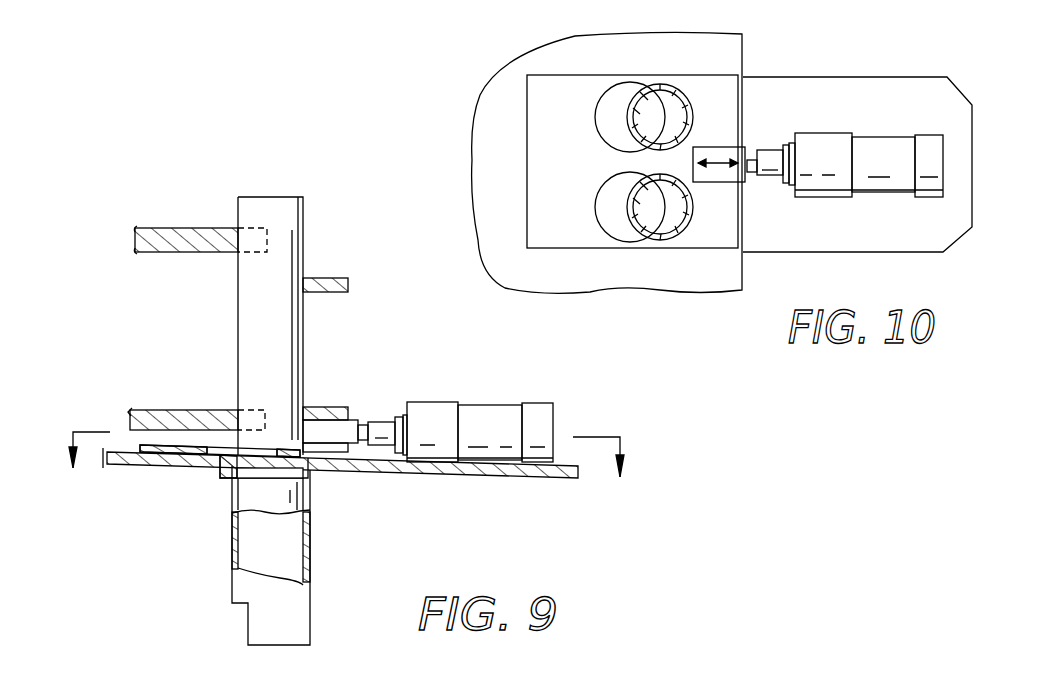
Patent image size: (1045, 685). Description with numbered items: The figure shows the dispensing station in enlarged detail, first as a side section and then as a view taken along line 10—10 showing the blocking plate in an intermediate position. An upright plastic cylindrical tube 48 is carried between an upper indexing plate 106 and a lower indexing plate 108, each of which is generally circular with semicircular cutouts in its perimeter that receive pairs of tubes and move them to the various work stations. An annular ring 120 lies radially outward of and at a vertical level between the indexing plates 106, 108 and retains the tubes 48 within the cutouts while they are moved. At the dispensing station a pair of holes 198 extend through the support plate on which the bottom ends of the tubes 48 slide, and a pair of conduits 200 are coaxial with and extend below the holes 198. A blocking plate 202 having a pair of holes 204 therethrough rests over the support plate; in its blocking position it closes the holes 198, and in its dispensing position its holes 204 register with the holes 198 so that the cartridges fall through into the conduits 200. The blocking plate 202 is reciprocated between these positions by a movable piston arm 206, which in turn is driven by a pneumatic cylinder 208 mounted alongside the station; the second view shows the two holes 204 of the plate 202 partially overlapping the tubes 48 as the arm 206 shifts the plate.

In FIG. 9, the section line 10— 10 is at (346, 470).
In FIG. 9, the plastic cylindrical tube 48 is at (300, 218).
In FIG. 10, the plastic cylindrical tube 48 is at (665, 90).
In FIG. 9, the upper indexing plate 106 is at (158, 232).
In FIG. 9, the lower indexing plate 108 is at (165, 410).
In FIG. 9, the annular ring 120 is at (322, 278).
In FIG. 9, the hole 198 is at (252, 465).
In FIG. 9, the conduit 200 is at (310, 542).
In FIG. 9, the blocking plate 202 is at (138, 443).
In FIG. 10, the blocking plate 202 is at (590, 116).
In FIG. 9, the hole 204 is at (226, 447).
In FIG. 10, the hole 204 is at (603, 195).
In FIG. 9, the movable piston arm 206 is at (365, 420).
In FIG. 10, the movable piston arm 206 is at (772, 153).
In FIG. 9, the pneumatic cylinder 208 is at (488, 406).
In FIG. 10, the pneumatic cylinder 208 is at (882, 143).